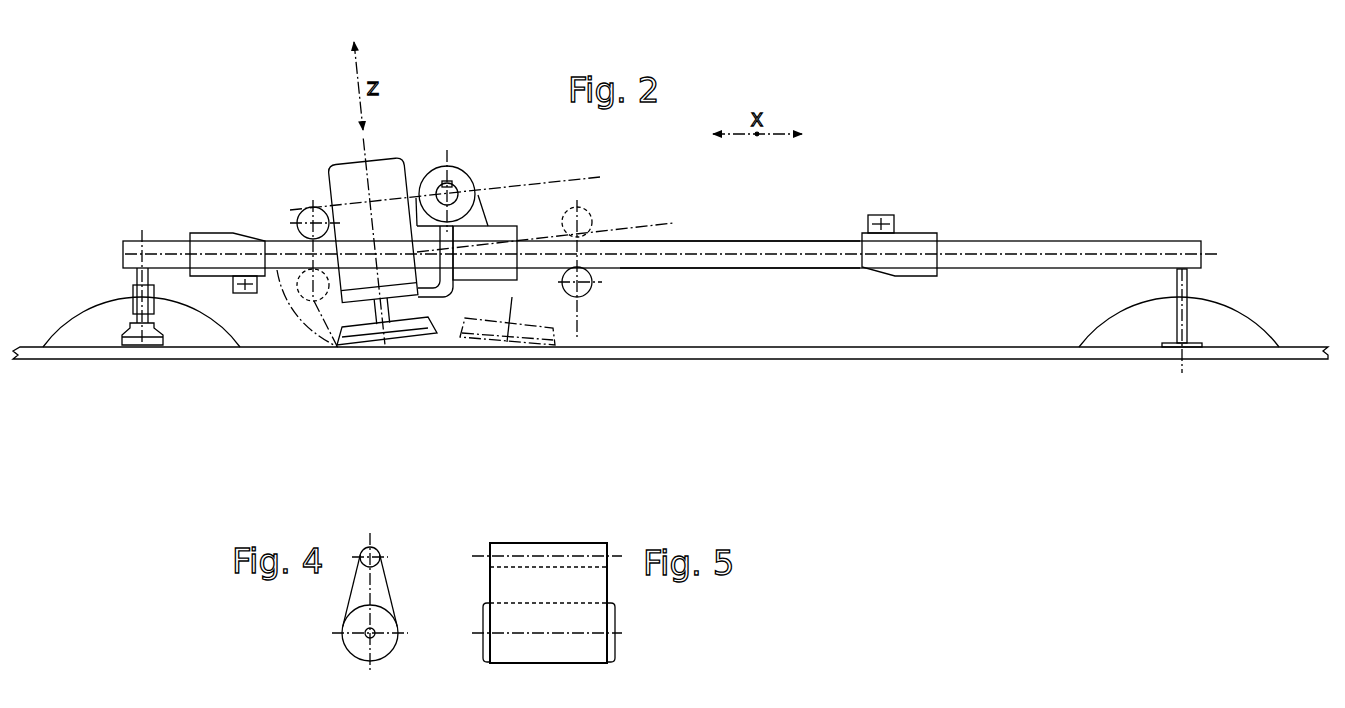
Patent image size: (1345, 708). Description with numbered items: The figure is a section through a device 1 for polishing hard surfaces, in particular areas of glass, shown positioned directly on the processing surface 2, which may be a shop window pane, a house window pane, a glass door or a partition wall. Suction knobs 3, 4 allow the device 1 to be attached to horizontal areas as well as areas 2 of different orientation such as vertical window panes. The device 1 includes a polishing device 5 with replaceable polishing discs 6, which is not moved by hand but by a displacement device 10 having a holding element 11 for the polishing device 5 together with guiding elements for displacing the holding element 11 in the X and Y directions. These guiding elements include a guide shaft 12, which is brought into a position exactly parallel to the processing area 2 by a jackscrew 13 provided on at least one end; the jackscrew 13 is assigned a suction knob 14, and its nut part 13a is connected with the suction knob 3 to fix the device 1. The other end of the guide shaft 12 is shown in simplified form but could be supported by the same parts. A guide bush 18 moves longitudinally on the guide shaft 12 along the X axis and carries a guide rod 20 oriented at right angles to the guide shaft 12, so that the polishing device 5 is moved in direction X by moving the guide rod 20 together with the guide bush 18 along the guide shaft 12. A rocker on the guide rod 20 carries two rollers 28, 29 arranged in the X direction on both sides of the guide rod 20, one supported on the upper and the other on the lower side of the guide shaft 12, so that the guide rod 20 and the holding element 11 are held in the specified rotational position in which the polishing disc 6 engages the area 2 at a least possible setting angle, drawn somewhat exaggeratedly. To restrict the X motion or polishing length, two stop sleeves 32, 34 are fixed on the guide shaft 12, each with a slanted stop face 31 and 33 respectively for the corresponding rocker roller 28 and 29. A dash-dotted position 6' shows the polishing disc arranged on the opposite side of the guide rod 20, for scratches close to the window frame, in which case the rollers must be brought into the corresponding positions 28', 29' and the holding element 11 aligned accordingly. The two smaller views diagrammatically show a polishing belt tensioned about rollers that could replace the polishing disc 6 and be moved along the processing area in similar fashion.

The device 1 is at (808, 212).
The processing surface 2 is at (722, 345).
The suction knob 3 is at (205, 337).
The suction knob 4 is at (1140, 333).
The polishing device 5 is at (327, 157).
The polishing disc 6 is at (387, 356).
The position of the polishing disc 6' is at (507, 346).
The displacement device 10 is at (1046, 240).
The holding element 11 is at (410, 292).
The guide shaft 12 is at (770, 248).
The jackscrew 13 is at (132, 308).
The nut part 13a is at (133, 289).
The suction knob 14 is at (150, 343).
The guide bush 18 is at (506, 231).
The guide rod 20 is at (456, 186).
The roller 28 is at (303, 233).
The roller position 28' is at (599, 251).
The roller 29 is at (583, 301).
The roller position 29' is at (307, 332).
The slanted stop face 31 is at (252, 238).
The stop sleeve 32 is at (207, 233).
The slanted stop face 33 is at (876, 273).
The stop sleeve 34 is at (915, 268).